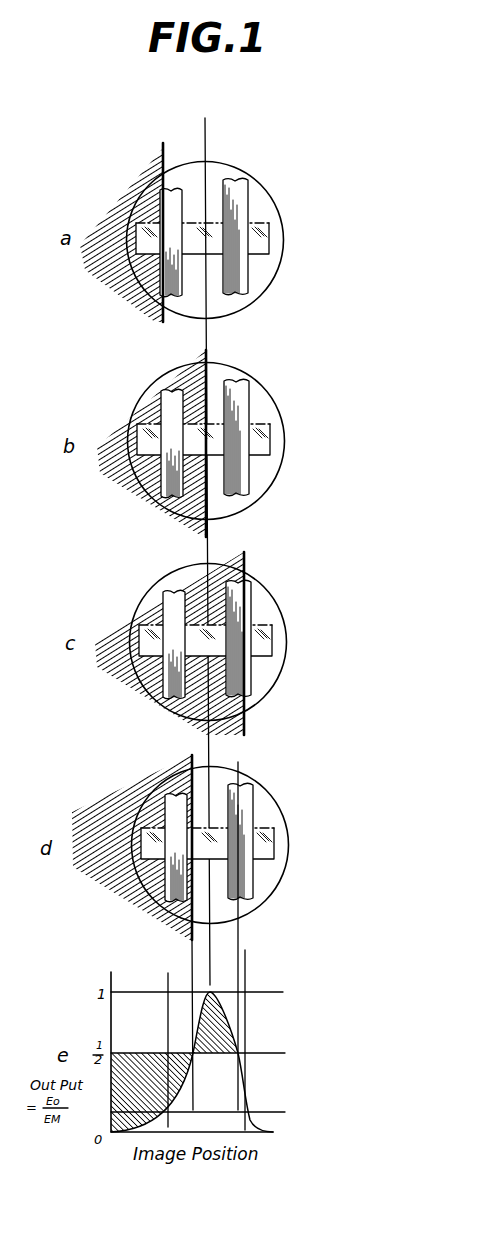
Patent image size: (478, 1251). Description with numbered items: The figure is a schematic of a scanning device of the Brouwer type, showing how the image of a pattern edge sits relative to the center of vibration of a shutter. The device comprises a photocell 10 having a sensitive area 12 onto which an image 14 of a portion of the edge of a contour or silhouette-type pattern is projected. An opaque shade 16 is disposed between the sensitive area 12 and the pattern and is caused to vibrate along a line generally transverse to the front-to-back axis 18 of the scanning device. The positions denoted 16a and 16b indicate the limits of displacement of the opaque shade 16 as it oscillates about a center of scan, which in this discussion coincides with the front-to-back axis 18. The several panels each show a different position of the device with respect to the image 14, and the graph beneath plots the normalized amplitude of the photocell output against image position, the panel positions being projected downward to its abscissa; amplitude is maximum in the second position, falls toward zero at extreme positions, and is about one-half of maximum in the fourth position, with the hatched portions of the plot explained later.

The photocell 10 is at (293, 185).
The sensitive area 12 is at (284, 224).
The image 14 is at (163, 143).
The opaque shade 16 is at (209, 261).
The position of the opaque shade 16a is at (163, 320).
The position of the opaque shade 16b is at (236, 312).
The front-to-back axis 18 is at (205, 152).